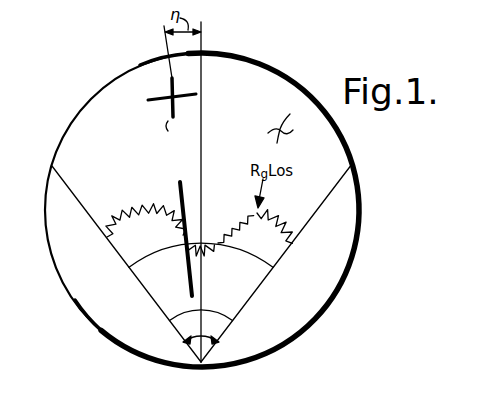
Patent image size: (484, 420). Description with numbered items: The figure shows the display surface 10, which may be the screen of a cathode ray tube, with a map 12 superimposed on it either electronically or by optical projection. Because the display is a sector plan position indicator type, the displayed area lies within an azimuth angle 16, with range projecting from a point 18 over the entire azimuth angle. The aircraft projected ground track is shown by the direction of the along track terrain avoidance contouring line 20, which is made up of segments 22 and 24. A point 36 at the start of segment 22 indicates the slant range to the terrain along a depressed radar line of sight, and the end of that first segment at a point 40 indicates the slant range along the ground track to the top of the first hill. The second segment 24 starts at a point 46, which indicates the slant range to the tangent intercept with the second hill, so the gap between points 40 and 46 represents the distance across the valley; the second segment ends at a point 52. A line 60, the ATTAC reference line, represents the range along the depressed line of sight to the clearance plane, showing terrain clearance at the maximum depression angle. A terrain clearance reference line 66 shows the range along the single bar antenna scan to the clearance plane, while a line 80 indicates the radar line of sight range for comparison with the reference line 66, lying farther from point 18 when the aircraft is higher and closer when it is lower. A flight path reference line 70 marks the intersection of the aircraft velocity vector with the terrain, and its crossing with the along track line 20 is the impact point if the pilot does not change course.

The display surface 10 is at (294, 80).
The map 12 is at (281, 119).
The azimuth angle 16 is at (213, 335).
The point 18 is at (196, 358).
The along track terrain avoidance contouring (ATTAC) line 20 is at (171, 105).
The first segment 22 is at (178, 200).
The second segment 24 is at (213, 192).
The point 36 is at (190, 290).
The point 40 is at (179, 184).
The point 46 is at (177, 128).
The point 52 is at (170, 79).
The ATTAC reference line 60 is at (201, 301).
The terrain clearance reference line 66 is at (252, 258).
The flight path reference line (FPRL) 70 is at (150, 99).
The radar line of sight range line 80 is at (290, 233).